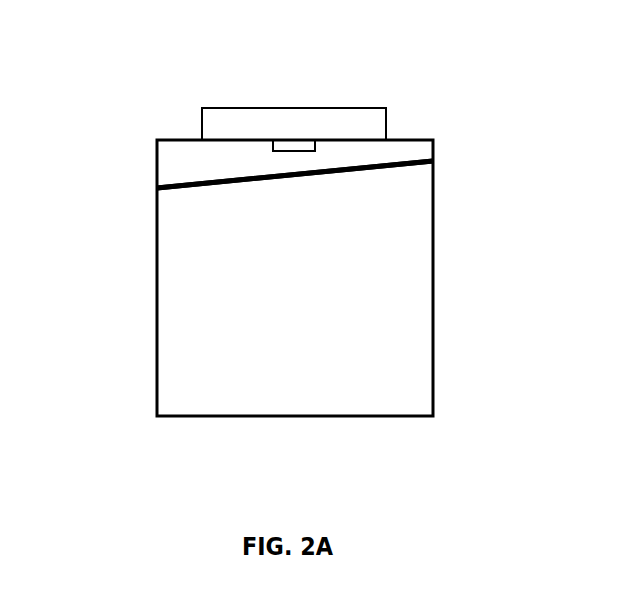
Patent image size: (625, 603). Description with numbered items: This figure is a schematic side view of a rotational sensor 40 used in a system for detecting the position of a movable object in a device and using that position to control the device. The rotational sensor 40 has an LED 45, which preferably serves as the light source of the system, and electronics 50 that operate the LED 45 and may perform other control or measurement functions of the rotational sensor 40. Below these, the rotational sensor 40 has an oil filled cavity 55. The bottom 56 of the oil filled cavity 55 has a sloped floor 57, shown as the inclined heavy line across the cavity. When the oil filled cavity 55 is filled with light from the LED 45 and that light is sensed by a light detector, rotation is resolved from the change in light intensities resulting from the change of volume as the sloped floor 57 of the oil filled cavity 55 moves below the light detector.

The rotational sensor 40 is at (306, 63).
The LED 45 is at (313, 152).
The electronics 50 is at (386, 108).
The oil filled cavity 55 is at (187, 168).
The bottom 56 is at (207, 187).
The sloped floor 57 is at (300, 179).